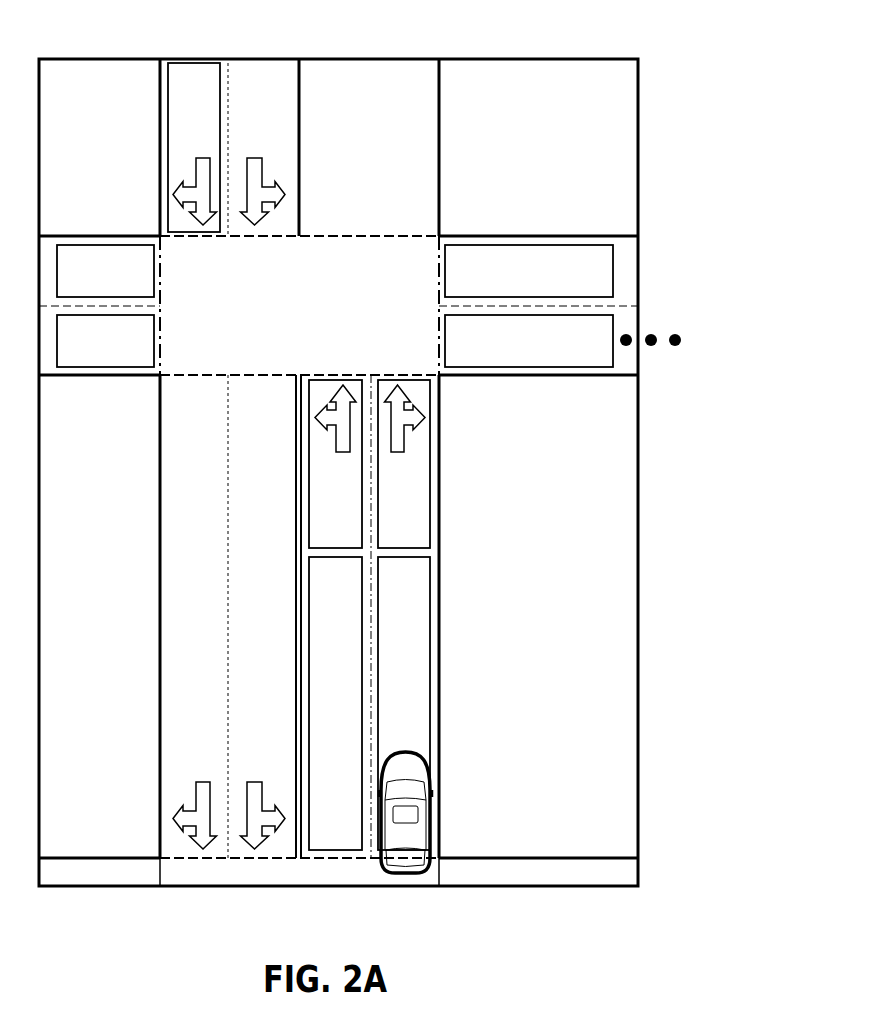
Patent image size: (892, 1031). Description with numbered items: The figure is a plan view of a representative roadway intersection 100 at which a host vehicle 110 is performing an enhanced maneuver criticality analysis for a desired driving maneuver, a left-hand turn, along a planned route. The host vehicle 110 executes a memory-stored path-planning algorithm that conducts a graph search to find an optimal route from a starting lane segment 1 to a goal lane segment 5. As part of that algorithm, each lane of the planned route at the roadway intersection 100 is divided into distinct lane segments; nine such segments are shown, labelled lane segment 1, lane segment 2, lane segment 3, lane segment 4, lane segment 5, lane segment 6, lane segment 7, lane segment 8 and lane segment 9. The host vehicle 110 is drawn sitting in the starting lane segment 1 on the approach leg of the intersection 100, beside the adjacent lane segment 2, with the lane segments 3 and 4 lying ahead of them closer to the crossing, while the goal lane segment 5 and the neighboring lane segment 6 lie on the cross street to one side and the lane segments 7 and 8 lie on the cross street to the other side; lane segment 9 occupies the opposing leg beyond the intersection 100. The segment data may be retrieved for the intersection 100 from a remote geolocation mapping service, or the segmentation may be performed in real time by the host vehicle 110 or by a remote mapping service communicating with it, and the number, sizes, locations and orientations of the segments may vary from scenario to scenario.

The roadway intersection 100 is at (490, 94).
The host vehicle 110 is at (420, 774).
The lane segment 1 is at (404, 703).
The lane segment 2 is at (335, 703).
The lane segment 3 is at (404, 464).
The lane segment 4 is at (335, 464).
The lane segment 5 is at (105, 271).
The lane segment 6 is at (105, 341).
The lane segment 7 is at (529, 341).
The lane segment 8 is at (529, 271).
The lane segment 9 is at (194, 147).